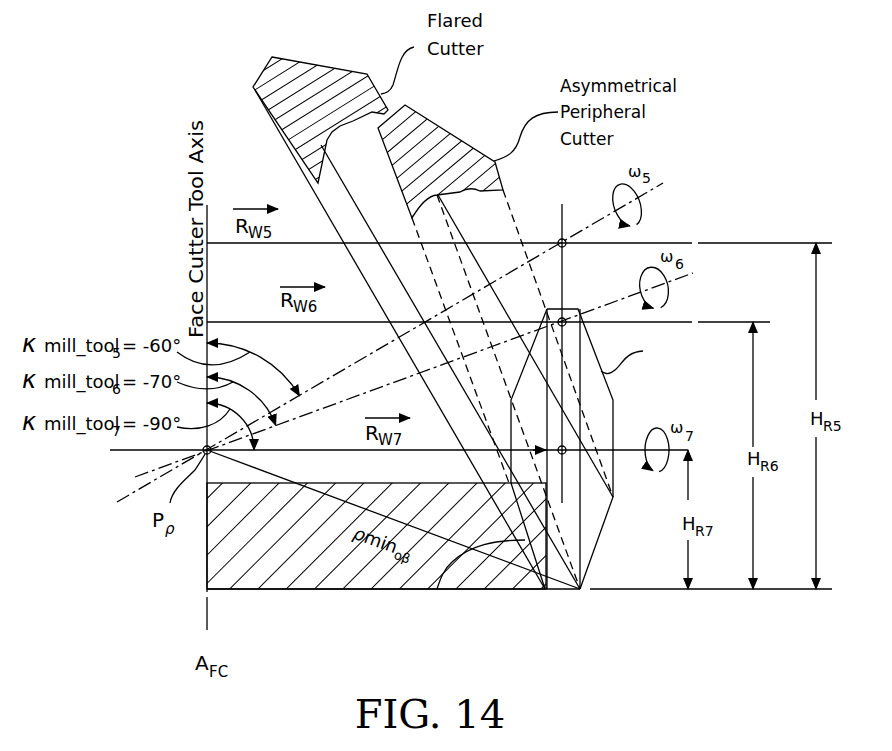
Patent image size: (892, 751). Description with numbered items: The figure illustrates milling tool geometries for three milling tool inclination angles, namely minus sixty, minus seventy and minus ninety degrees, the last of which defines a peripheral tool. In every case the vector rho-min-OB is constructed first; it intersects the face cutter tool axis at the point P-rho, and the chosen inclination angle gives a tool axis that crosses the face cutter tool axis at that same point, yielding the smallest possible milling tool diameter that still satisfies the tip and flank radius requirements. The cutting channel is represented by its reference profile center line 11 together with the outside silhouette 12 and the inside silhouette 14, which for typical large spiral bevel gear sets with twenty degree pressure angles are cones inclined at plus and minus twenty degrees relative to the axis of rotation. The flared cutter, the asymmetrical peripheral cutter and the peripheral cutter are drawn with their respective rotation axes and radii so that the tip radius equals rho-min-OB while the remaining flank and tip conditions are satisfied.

The reference profile center line 11 is at (560, 216).
The outside silhouette 12 is at (597, 543).
The inside silhouette 14 is at (437, 589).